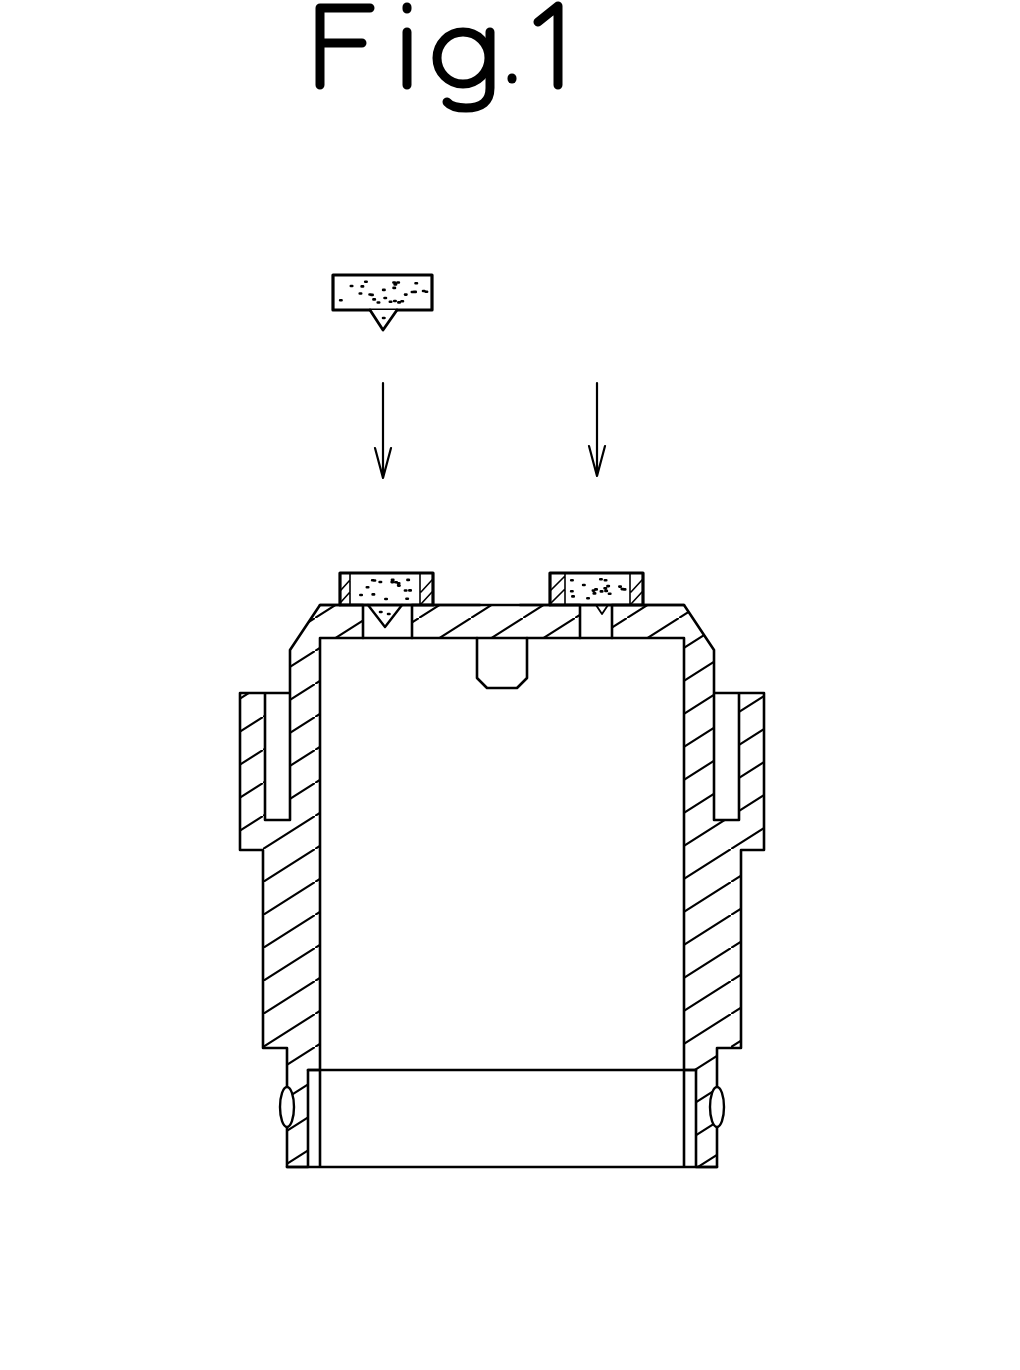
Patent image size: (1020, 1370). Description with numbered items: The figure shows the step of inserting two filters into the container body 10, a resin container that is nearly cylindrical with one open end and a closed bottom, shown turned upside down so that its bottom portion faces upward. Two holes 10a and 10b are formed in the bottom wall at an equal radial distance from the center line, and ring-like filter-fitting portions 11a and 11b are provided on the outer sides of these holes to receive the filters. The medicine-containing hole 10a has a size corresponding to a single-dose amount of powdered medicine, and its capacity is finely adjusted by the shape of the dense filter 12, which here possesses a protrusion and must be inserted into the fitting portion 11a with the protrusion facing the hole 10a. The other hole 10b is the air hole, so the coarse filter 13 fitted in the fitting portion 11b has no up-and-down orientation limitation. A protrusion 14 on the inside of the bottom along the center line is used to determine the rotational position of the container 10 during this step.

The container body 10 is at (246, 1053).
The medicine-containing hole 10a is at (360, 626).
The air hole 10b is at (620, 573).
The filter-fitting portion 11a is at (340, 587).
The filter-fitting portion 11b is at (643, 582).
The dense filter 12 is at (333, 292).
The coarse filter 13 is at (595, 573).
The protrusion 14 is at (497, 690).